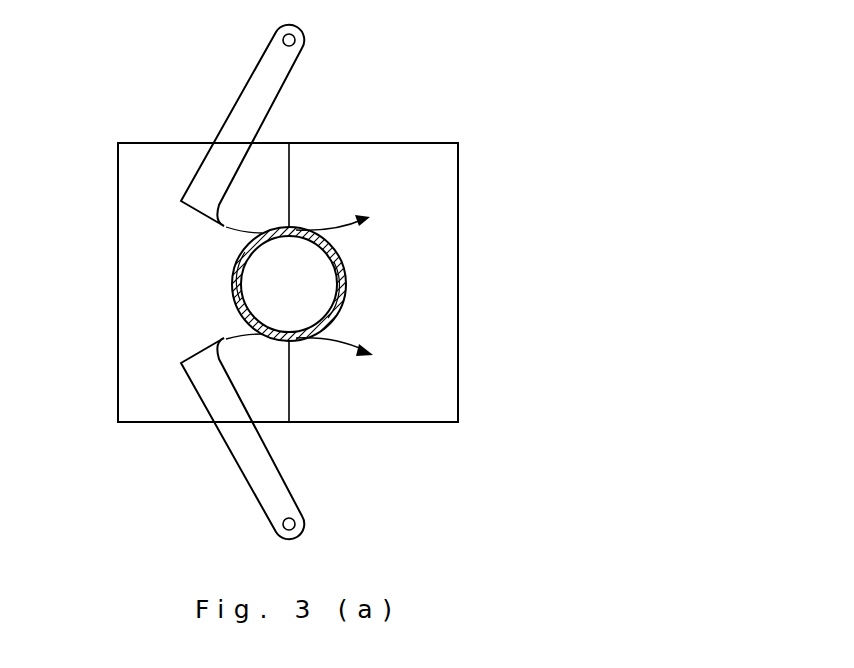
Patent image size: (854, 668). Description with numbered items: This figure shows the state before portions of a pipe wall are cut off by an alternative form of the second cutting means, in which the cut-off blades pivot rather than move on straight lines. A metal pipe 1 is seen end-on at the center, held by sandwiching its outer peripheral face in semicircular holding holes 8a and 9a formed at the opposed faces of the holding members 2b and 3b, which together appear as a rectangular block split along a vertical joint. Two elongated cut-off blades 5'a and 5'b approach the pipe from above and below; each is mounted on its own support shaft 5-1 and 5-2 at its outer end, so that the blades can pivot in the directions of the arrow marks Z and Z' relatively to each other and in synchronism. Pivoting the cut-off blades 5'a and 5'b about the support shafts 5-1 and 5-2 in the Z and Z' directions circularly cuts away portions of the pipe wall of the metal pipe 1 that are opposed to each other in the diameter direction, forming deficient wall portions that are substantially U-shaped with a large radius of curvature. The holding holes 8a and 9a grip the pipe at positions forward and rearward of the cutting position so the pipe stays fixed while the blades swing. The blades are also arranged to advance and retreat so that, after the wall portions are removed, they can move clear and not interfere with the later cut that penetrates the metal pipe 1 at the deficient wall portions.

The metal pipe 1 is at (340, 270).
The holding member 2b is at (138, 280).
The holding member 3b is at (437, 270).
The cut-off blade 5'a is at (231, 129).
The cut-off blade 5'b is at (231, 436).
The support shaft 5-1 is at (296, 42).
The support shaft 5-2 is at (296, 522).
The holding hole 8a is at (342, 298).
The holding hole 9a is at (233, 282).
The arrow mark Z direction Z is at (340, 211).
The arrow mark Z' direction Z' is at (340, 362).